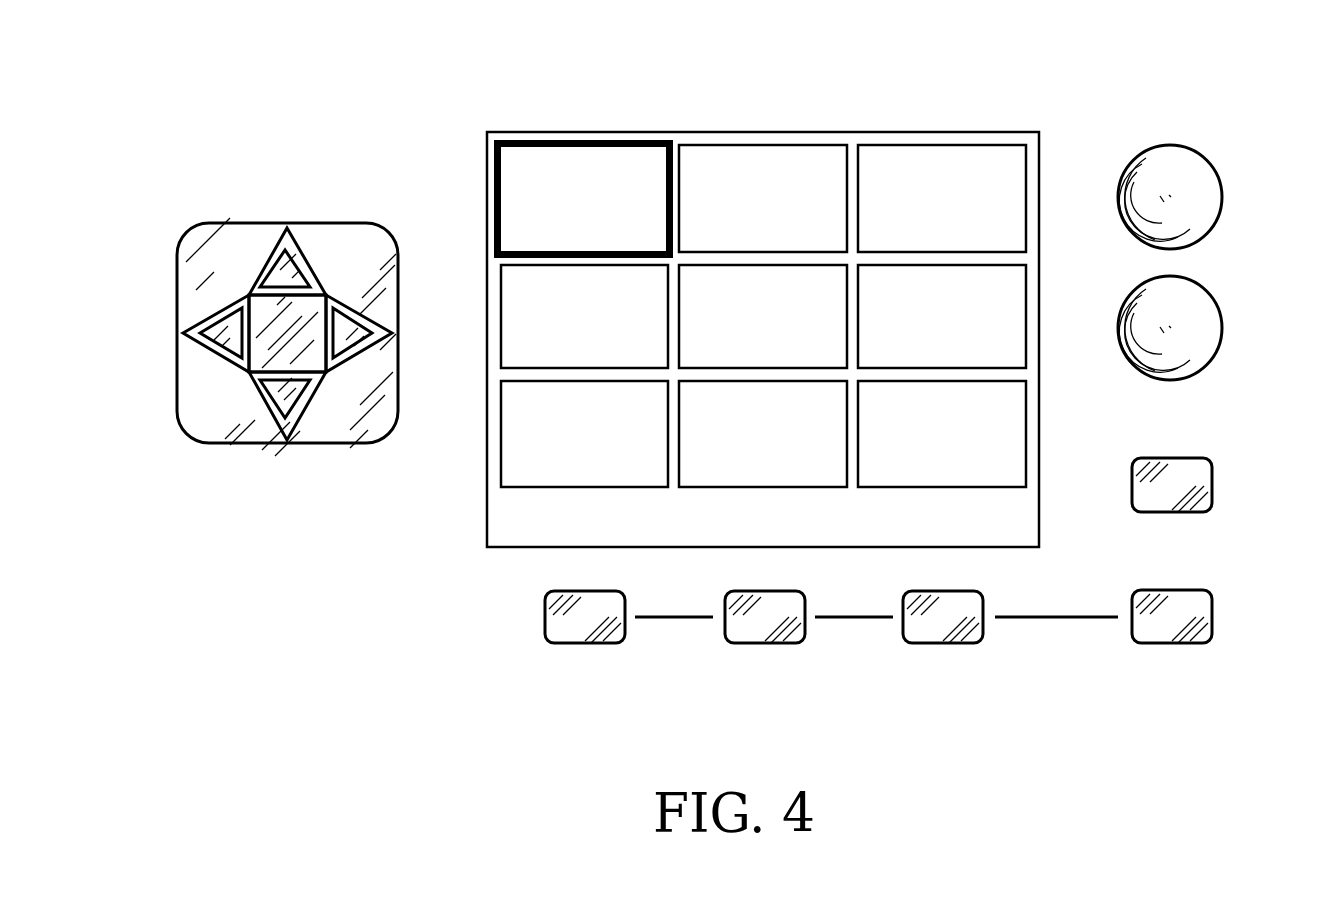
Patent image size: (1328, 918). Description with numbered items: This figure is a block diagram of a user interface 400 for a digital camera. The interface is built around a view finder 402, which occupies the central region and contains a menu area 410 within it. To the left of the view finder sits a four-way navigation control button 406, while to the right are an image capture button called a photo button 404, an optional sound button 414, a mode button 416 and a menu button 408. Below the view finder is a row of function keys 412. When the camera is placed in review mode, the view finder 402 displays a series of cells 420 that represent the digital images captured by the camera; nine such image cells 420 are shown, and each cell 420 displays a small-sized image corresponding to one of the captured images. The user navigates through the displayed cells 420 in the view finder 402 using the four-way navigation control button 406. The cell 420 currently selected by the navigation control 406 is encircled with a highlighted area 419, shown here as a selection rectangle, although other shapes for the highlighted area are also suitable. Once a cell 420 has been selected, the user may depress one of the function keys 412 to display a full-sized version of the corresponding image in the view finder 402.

The user interface 400 is at (918, 802).
The view finder 402 is at (1040, 149).
The photo button 404 is at (1203, 152).
The four-way navigation control button 406 is at (212, 463).
The menu button 408 is at (1160, 590).
The menu area 410 is at (443, 508).
The function keys 412 is at (513, 640).
The sound button 414 is at (1203, 283).
The mode button 416 is at (1160, 458).
The highlighted area 419 is at (650, 120).
The cell 420 is at (540, 178).